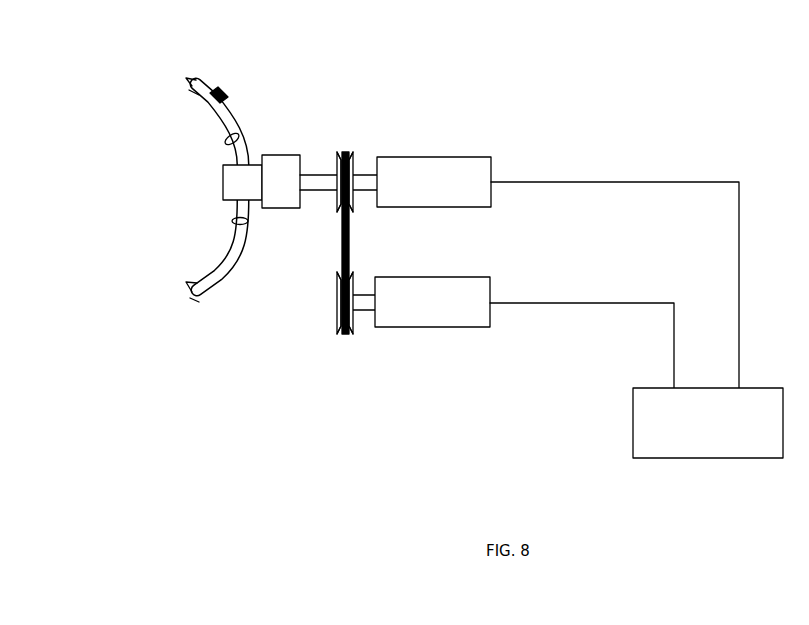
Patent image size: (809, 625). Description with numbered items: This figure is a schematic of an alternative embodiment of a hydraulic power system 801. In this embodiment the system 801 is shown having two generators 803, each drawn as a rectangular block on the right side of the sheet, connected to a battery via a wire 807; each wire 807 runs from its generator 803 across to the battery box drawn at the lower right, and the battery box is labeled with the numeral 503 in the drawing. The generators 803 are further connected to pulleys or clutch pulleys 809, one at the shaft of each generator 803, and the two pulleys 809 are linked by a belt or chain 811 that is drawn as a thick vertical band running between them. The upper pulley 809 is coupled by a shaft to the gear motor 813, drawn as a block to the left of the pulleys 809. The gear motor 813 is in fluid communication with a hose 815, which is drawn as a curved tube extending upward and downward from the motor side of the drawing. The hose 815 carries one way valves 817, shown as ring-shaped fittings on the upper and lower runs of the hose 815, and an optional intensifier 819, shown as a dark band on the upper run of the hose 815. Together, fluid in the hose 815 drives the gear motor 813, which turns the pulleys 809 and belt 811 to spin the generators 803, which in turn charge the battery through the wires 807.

The hydraulic power system 801 is at (122, 66).
The generator 803 is at (439, 157).
The wire 807 is at (637, 182).
The pulley 809 is at (356, 160).
The belt 811 is at (341, 243).
The gear motor 813 is at (284, 155).
The hose 815 is at (215, 280).
The one way valve 817 is at (243, 127).
The intensifier 819 is at (216, 103).
The battery 503 is at (633, 427).